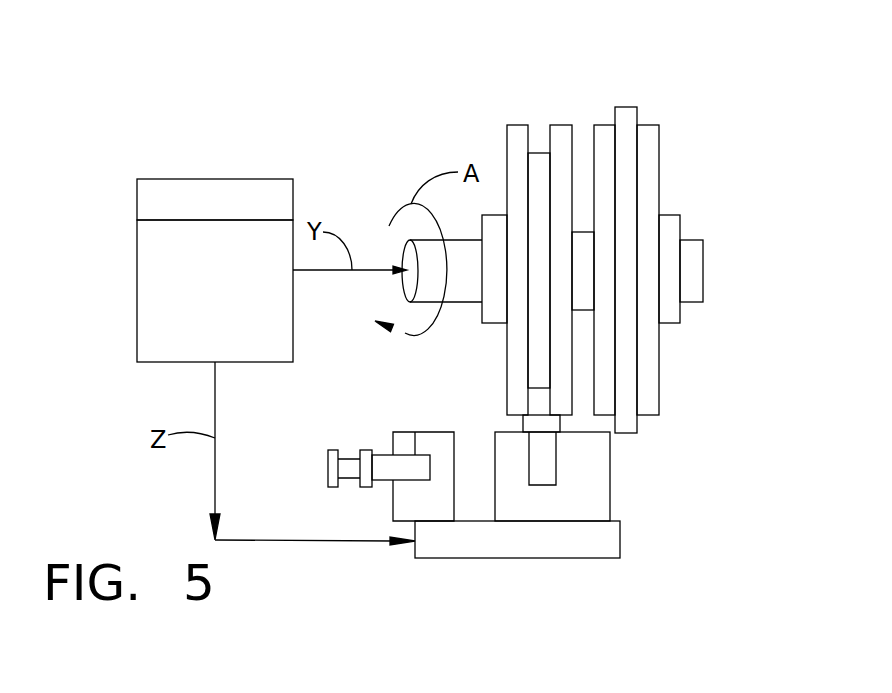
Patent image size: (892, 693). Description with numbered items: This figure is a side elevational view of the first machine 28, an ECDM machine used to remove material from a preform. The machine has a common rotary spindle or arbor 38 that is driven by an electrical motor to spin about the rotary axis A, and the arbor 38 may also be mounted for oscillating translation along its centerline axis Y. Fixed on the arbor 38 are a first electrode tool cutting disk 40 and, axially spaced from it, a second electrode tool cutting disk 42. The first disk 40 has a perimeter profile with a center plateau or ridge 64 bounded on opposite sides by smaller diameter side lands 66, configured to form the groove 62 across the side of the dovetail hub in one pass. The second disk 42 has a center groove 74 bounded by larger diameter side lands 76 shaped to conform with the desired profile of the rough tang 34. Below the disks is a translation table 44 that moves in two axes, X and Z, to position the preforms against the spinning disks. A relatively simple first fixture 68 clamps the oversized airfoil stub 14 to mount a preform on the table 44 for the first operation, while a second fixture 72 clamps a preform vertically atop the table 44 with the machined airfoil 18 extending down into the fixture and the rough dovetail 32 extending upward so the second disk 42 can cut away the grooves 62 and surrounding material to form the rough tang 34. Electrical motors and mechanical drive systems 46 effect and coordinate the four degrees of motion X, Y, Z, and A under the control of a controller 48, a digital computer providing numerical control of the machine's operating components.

The airfoil stub 14 is at (415, 455).
The airfoil 18 is at (556, 470).
The first machine 28 is at (388, 161).
The rough dovetail 32 is at (327, 470).
The rough tang 34 is at (520, 428).
The arbor 38 is at (463, 302).
The first electrode tool cutting disk 40 is at (600, 233).
The second electrode tool cutting disk 42 is at (577, 110).
The translation table 44 is at (620, 545).
The mechanical drive systems 46 is at (137, 320).
The controller 48 is at (137, 205).
The groove 62 is at (348, 481).
The center plateau or ridge 64 is at (626, 106).
The side lands 66 is at (648, 124).
The first fixture 68 is at (392, 442).
The second fixture 72 is at (610, 452).
The center groove 74 is at (538, 152).
The side lands 76 is at (518, 124).